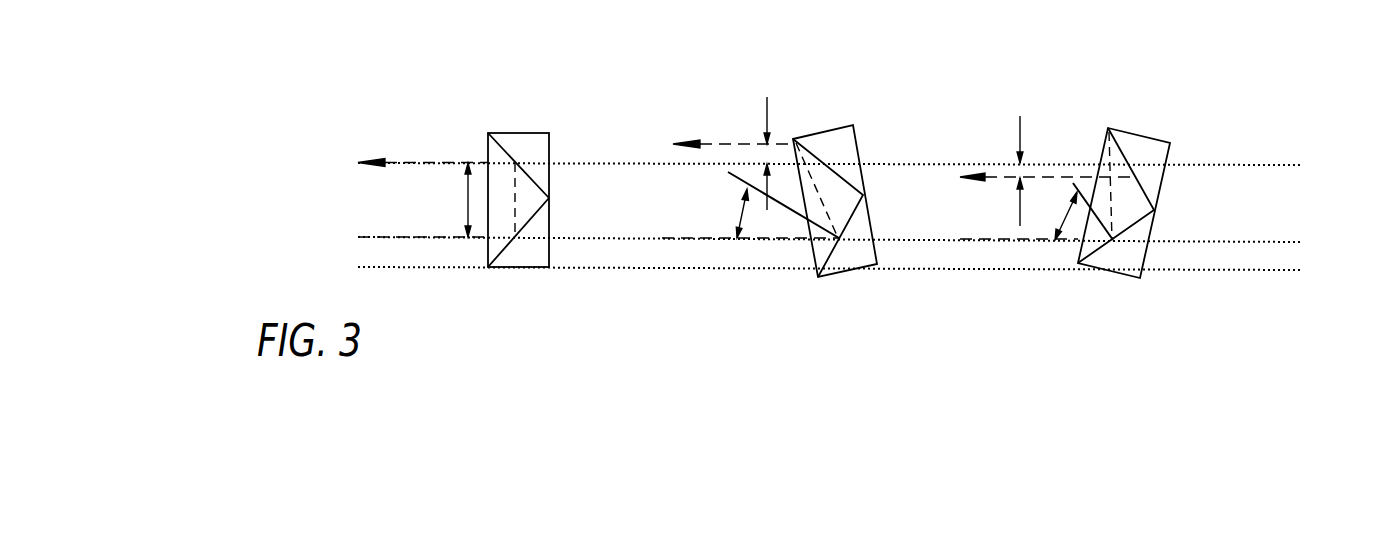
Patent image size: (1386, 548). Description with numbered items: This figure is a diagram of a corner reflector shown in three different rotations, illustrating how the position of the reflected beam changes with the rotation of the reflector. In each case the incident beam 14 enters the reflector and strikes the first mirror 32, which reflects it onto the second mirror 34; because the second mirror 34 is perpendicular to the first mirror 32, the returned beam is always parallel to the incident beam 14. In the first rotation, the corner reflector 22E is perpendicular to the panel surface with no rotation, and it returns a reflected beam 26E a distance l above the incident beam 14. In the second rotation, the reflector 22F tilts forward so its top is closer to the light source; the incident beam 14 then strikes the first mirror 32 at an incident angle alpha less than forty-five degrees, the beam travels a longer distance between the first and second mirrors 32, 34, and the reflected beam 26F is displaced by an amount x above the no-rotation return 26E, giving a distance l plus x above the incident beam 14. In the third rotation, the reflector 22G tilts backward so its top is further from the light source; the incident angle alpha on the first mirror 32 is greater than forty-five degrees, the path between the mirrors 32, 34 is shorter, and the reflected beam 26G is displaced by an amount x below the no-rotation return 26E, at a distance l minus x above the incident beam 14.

The incident beam 14 is at (396, 238).
The corner reflector with no rotation 22E is at (484, 172).
The corner reflector tilted forward 22F is at (820, 103).
The corner reflector tilted backward 22G is at (1087, 115).
The reflected beam (no rotation) 26E is at (407, 162).
The reflected beam (forward tilt) 26F is at (738, 143).
The reflected beam (backward tilt) 26G is at (1005, 177).
The first mirror 32 is at (502, 253).
The second mirror 34 is at (507, 153).